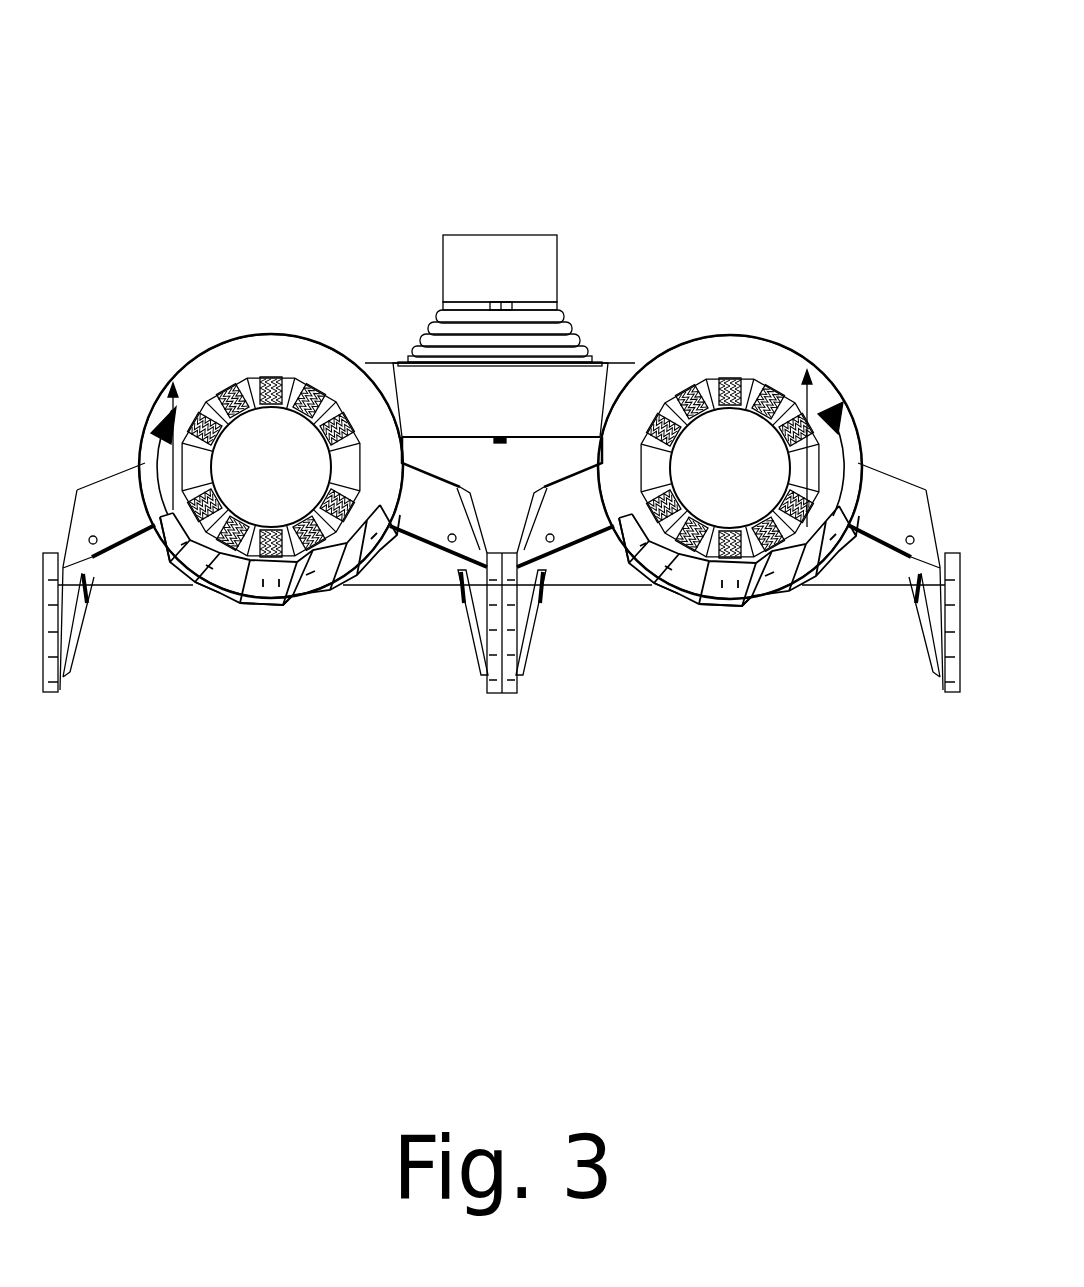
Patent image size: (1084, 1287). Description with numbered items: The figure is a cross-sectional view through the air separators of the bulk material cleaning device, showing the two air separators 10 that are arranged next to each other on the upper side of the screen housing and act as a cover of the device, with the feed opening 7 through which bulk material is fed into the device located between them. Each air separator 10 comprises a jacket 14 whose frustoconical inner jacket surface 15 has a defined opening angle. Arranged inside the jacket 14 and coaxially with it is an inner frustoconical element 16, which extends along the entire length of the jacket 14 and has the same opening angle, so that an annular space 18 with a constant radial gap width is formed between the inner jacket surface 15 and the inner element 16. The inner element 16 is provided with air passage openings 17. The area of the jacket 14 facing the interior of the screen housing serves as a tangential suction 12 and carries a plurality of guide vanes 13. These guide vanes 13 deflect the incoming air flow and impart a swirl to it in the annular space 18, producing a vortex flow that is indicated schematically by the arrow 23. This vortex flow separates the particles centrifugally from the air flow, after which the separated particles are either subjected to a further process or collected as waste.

The feed opening 7 is at (486, 255).
The air separator 10 is at (187, 348).
The tangential suction 12 is at (273, 622).
The guide vanes 13 is at (290, 590).
The jacket 14 is at (273, 333).
The inner jacket surface 15 is at (152, 528).
The inner frustoconical element 16 is at (255, 590).
The air passage openings 17 is at (343, 435).
The annular space 18 is at (222, 370).
The arrow 23 is at (150, 468).